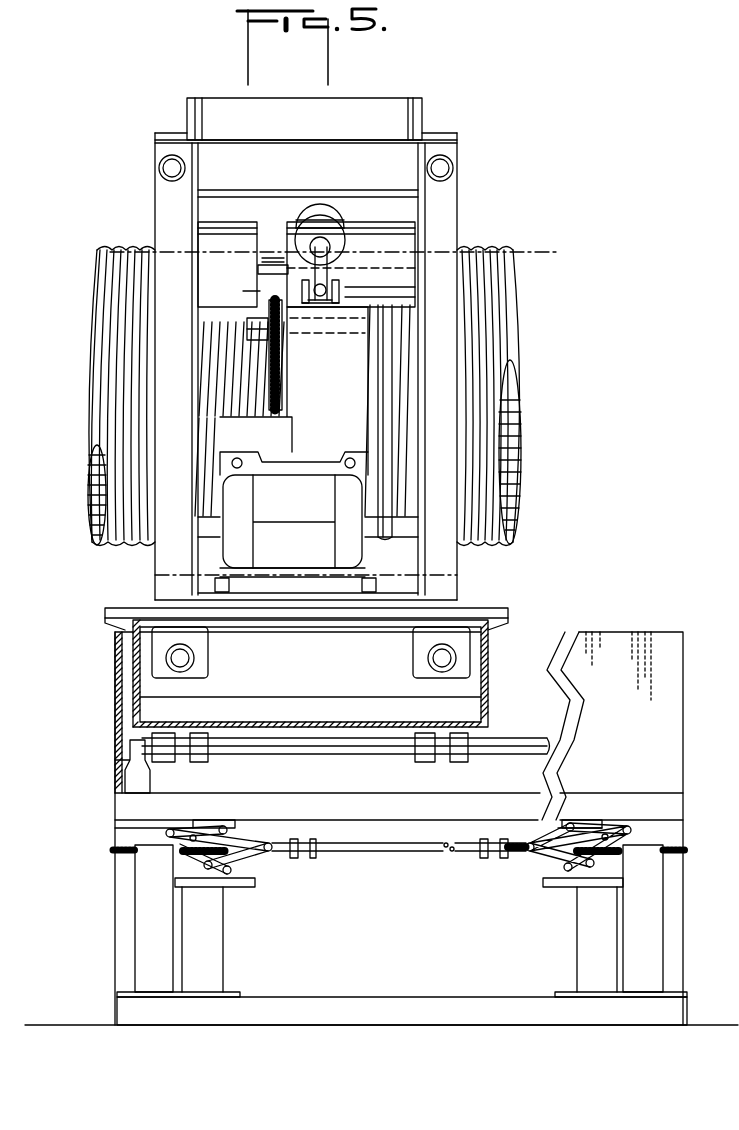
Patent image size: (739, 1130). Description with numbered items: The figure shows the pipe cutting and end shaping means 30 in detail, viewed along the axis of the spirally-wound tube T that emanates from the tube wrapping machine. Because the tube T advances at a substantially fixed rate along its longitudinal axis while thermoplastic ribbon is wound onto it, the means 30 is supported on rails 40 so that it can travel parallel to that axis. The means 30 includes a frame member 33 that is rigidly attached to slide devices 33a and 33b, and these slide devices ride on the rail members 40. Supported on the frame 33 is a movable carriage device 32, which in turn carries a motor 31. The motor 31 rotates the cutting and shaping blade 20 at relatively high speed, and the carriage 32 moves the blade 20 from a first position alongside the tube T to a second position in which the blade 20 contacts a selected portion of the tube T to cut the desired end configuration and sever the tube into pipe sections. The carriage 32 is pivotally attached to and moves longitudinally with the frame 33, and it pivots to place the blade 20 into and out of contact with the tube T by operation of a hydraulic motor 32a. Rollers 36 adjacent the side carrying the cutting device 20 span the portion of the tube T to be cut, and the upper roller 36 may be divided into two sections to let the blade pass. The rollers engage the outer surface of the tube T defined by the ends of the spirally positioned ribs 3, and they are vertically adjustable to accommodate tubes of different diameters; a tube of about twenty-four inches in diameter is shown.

The pipe cutting and end shaping means 30 is at (150, 101).
The spirally positioned ribs 3 is at (145, 248).
The tube T is at (107, 250).
The rollers 36 is at (280, 222).
The hydraulic motor 32a is at (342, 210).
The cutting and shaping blade 20 is at (257, 307).
The movable carriage device 32 is at (341, 391).
The motor 31 is at (309, 515).
The frame member 33 is at (500, 610).
The slide device 33a is at (200, 760).
The slide device 33b is at (425, 760).
The rails 40 is at (315, 747).